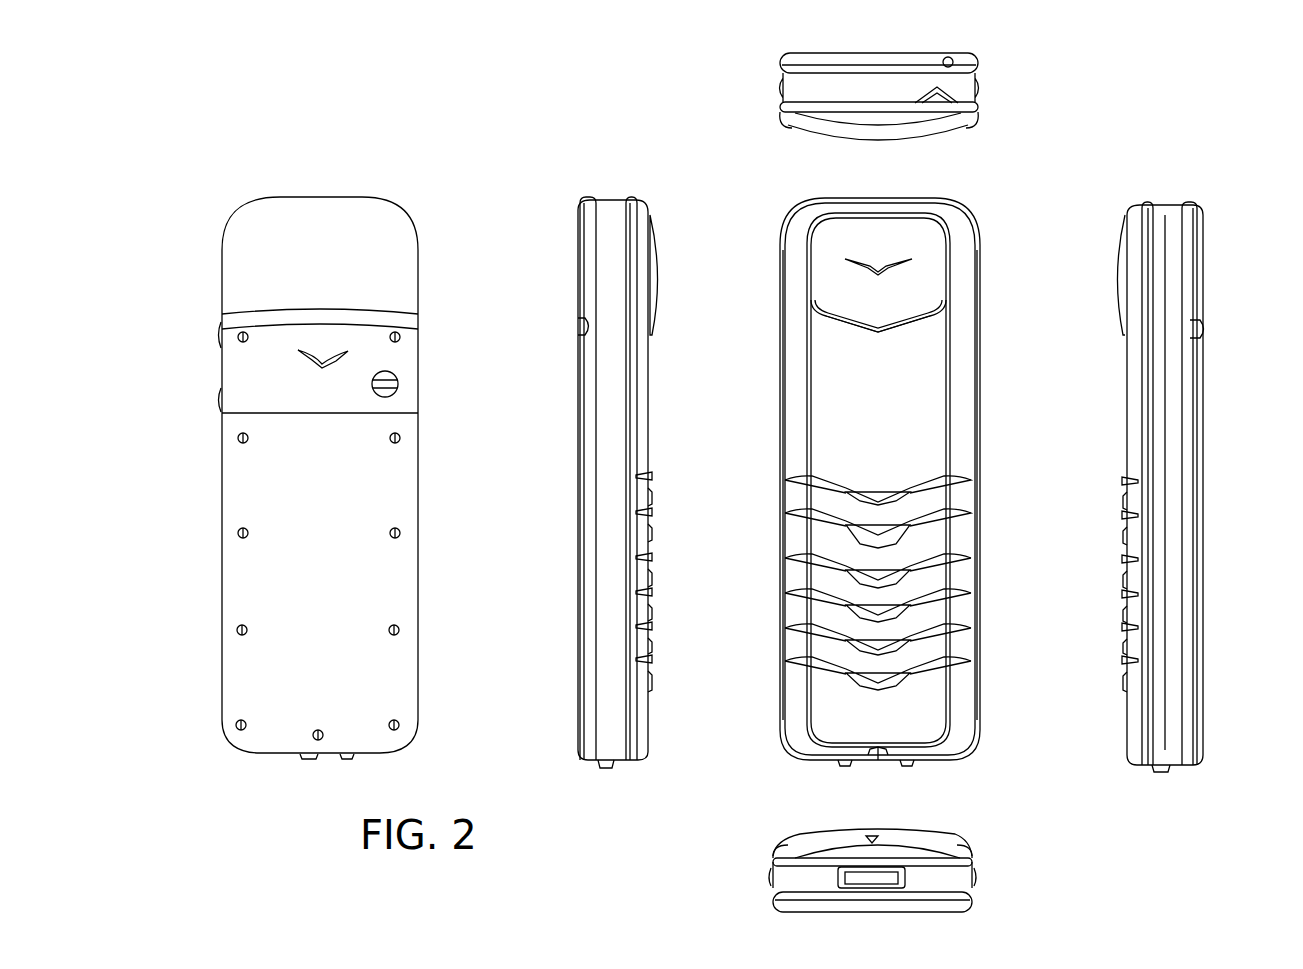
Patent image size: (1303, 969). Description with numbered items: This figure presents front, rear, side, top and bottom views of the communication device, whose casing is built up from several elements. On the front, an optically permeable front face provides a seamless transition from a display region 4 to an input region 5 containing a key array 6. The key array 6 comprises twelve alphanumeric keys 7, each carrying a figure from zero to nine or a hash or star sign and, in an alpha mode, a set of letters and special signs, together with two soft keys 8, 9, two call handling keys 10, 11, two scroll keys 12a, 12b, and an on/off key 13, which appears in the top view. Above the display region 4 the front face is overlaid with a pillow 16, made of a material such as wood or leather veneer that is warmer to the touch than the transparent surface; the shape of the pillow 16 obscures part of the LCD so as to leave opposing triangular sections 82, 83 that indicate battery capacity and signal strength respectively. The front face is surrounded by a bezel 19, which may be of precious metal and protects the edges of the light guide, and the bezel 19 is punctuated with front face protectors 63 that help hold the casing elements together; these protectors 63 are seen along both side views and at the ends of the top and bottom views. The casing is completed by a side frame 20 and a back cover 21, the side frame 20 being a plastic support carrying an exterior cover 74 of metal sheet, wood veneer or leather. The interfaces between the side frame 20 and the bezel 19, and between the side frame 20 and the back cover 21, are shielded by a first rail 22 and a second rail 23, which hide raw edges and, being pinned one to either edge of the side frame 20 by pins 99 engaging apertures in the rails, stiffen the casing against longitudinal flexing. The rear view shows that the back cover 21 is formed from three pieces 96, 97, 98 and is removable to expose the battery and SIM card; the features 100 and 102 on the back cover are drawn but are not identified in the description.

The display region 4 is at (888, 410).
The input region 5 is at (888, 535).
The key array 6 is at (771, 478).
The alphanumeric keys 7 is at (985, 557).
The soft key 8 is at (805, 496).
The soft key 9 is at (925, 488).
The call handling key 10 is at (808, 536).
The call handling key 11 is at (925, 519).
The scroll key 12a is at (905, 488).
The scroll key 12b is at (905, 548).
The on/off key 13 is at (958, 92).
The pillow 16 is at (835, 276).
The bezel 19 is at (640, 408).
The side frame 20 is at (1172, 675).
The back cover 21 is at (252, 499).
The first rail 22 is at (632, 199).
The second rail 23 is at (590, 199).
The front face protectors 63 is at (652, 556).
The exterior cover 74 is at (617, 542).
The triangular section 82 is at (913, 332).
The triangular section 83 is at (848, 334).
The back cover piece 96 is at (272, 257).
The back cover piece 97 is at (393, 358).
The back cover piece 98 is at (368, 526).
The pins 99 is at (240, 630).
The camera lens 100 is at (398, 385).
The logo 102 is at (320, 365).